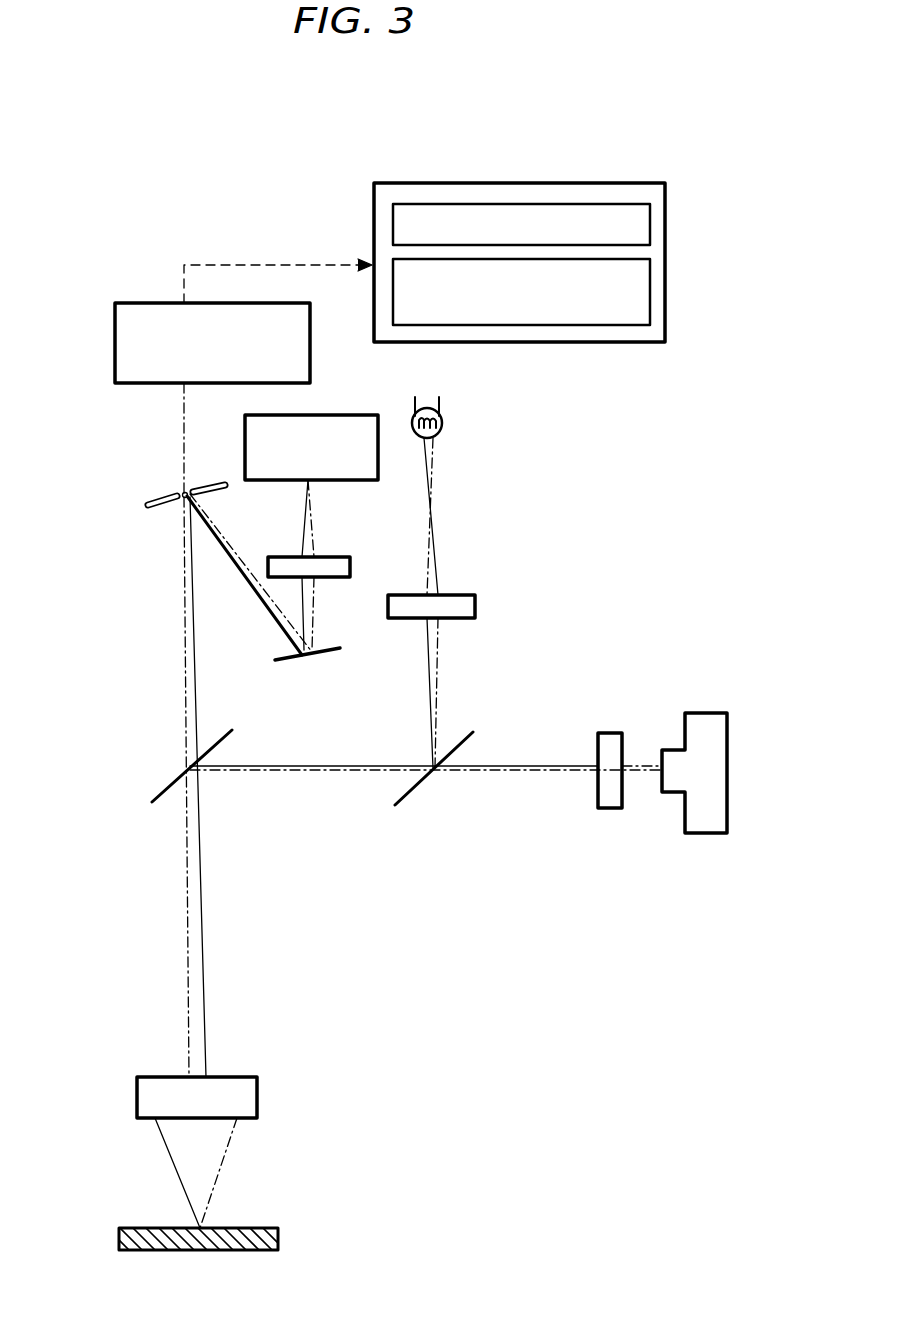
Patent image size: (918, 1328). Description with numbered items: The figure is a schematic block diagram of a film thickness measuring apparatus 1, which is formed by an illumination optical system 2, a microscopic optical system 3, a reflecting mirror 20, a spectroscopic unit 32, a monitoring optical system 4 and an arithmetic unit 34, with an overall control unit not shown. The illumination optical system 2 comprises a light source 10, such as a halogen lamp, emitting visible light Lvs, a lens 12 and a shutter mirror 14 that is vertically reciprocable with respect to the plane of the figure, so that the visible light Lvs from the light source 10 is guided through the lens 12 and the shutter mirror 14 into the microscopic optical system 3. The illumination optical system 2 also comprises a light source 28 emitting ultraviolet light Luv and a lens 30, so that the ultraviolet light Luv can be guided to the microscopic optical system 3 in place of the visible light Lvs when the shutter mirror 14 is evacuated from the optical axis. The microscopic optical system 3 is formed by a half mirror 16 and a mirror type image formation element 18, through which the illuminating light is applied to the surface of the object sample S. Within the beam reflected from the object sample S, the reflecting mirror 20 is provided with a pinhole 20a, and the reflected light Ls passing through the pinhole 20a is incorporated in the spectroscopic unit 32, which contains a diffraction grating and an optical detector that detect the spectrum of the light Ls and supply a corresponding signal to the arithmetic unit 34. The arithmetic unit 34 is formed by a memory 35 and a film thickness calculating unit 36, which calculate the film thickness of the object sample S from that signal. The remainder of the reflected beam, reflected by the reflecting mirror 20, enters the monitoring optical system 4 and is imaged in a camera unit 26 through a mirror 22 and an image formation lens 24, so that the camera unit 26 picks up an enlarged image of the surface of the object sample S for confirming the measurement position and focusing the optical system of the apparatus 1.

The film thickness measuring apparatus 1 is at (127, 147).
The illumination optical system 2 is at (594, 573).
The microscopic optical system 3 is at (288, 985).
The monitoring optical system 4 is at (370, 381).
The light source 10 is at (443, 419).
The lens 12 is at (478, 602).
The shutter mirror 14 is at (397, 804).
The half mirror 16 is at (167, 786).
The mirror type image formation element 18 is at (257, 1080).
The reflecting mirror 20 is at (150, 505).
The pinhole 20a is at (184, 497).
The mirror 22 is at (276, 662).
The image formation lens 24 is at (347, 557).
The camera unit 26 is at (297, 415).
The light source 28 is at (722, 713).
The lens 30 is at (618, 733).
The spectroscopic unit 32 is at (115, 320).
The arithmetic unit 34 is at (551, 230).
The memory 35 is at (653, 228).
The film thickness calculating unit 36 is at (653, 283).
The object sample S is at (140, 1218).
The reflected light Ls is at (184, 440).
The visible light Lvs is at (435, 487).
The ultraviolet light Luv is at (573, 772).